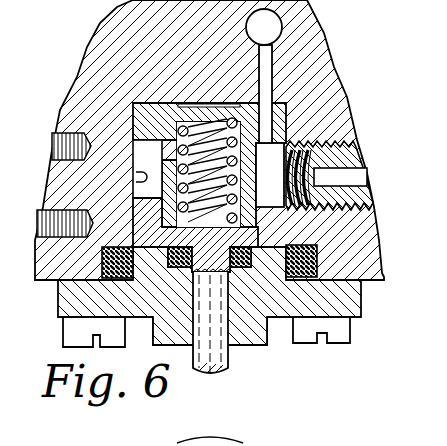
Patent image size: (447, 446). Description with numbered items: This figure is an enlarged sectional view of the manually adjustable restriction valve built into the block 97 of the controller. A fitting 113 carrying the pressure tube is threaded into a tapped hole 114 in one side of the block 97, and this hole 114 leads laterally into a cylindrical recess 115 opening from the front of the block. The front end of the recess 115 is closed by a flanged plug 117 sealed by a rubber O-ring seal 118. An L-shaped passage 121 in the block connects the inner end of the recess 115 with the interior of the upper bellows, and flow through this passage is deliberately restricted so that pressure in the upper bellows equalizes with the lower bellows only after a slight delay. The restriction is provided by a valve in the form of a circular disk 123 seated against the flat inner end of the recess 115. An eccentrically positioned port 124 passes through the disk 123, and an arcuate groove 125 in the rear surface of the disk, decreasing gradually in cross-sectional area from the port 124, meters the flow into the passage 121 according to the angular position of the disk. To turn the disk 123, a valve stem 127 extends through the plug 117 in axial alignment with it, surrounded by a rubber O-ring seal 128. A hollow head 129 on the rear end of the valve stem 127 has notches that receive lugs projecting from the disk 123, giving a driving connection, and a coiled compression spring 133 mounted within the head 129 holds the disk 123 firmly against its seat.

The block 97 is at (85, 86).
The fitting 113 is at (361, 193).
The tapped hole 114 is at (307, 212).
The cylindrical recess 115 is at (136, 182).
The flanged plug 117 is at (257, 337).
The rubber O-ring seal 118 is at (294, 274).
The L-shaped passage 121 is at (267, 75).
The circular disk 123 is at (148, 118).
The eccentrically positioned port 124 is at (268, 118).
The arcuate groove 125 is at (152, 104).
The valve stem 127 is at (207, 360).
The rubber O-ring seal 128 is at (178, 267).
The hollow head 129 is at (133, 198).
The coiled compression spring 133 is at (208, 146).